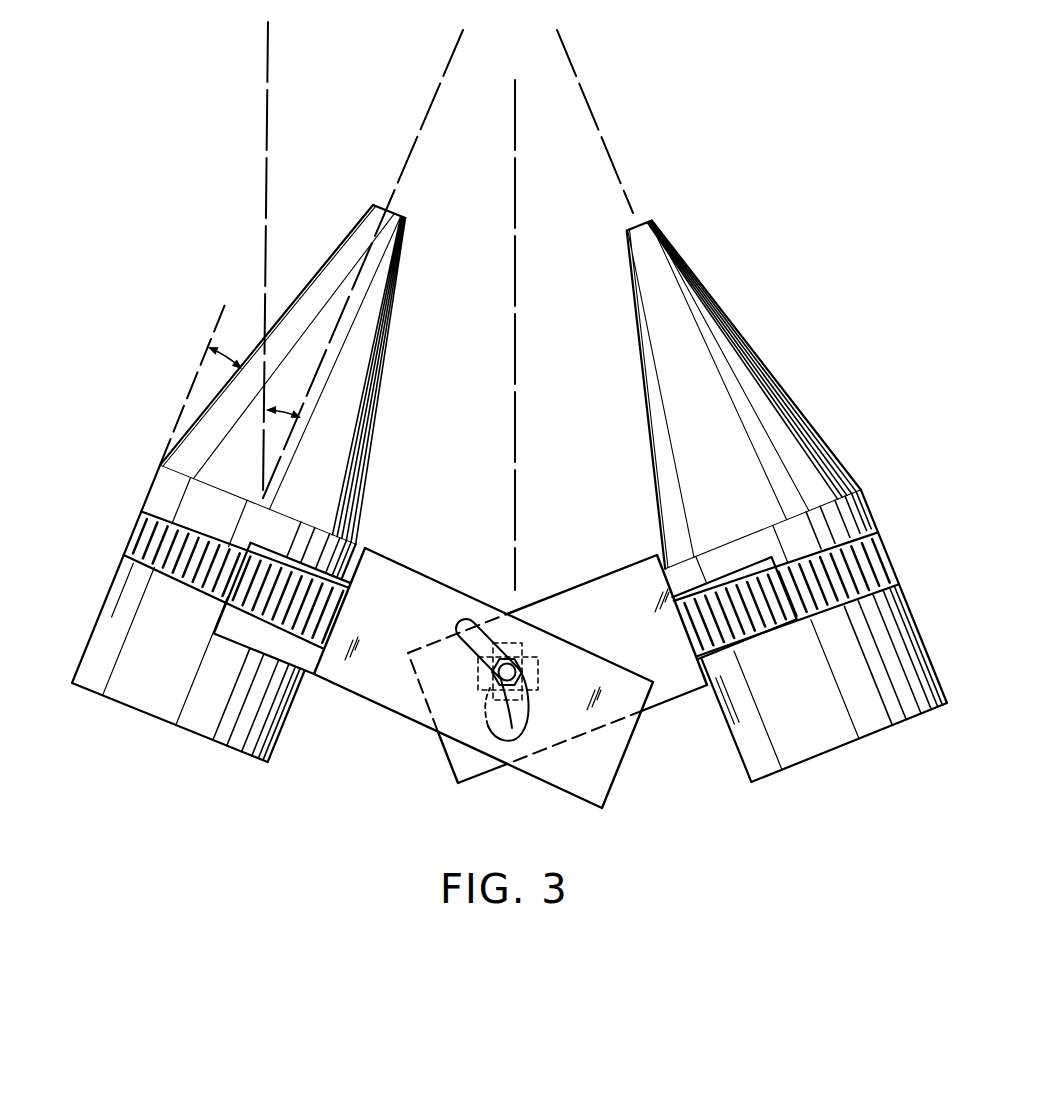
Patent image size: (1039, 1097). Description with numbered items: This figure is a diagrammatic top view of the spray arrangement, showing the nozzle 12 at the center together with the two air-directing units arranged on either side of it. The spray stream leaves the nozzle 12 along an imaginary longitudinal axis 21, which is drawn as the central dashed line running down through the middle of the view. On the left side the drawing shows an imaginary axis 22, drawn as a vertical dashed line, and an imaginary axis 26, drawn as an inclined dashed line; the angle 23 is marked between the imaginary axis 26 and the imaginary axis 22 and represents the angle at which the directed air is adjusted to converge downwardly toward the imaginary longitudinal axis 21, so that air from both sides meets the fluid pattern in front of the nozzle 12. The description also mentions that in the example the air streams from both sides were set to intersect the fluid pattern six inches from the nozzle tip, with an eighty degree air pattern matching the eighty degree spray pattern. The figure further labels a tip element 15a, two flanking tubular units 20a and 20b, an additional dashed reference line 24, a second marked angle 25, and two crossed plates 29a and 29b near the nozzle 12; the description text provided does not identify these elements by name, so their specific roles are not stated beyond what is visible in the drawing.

The nozzle 12 is at (528, 640).
The nozzle tip 15a is at (362, 218).
The first nozzle tube 20a is at (278, 466).
The second nozzle tube 20b is at (807, 463).
The imaginary longitudinal axis 21 is at (515, 135).
The imaginary axis 22 is at (268, 56).
The angle 23 is at (281, 409).
The tube axis extension line 24 is at (191, 387).
The tip angle 25 is at (237, 342).
The imaginary axis 26 is at (456, 55).
The mounting plate 29a is at (663, 697).
The mounting plate 29b is at (563, 770).